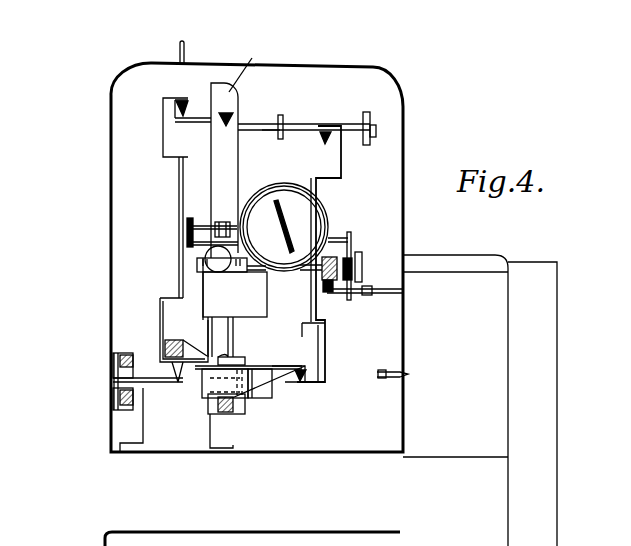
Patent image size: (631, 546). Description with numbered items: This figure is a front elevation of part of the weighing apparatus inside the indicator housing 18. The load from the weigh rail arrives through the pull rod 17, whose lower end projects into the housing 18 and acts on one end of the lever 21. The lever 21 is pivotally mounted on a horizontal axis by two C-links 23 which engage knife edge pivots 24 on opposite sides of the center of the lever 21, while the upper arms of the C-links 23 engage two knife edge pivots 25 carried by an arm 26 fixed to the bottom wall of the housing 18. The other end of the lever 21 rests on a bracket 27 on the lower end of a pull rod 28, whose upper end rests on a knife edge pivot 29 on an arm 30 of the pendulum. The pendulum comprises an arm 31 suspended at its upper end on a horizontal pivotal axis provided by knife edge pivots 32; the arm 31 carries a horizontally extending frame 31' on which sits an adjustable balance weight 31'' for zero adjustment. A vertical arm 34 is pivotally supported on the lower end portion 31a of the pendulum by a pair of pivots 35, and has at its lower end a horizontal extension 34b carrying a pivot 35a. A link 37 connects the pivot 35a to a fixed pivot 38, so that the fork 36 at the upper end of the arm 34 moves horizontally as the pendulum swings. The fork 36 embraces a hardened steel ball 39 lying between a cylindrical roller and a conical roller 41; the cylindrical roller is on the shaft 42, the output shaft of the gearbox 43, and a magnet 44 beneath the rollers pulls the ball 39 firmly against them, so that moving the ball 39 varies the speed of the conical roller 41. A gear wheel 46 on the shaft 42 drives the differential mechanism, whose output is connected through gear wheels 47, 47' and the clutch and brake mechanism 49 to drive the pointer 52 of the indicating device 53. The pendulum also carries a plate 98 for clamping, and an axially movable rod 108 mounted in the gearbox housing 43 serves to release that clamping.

The pull rod 17 is at (186, 51).
The indicator housing 18 is at (403, 137).
The lever 21 is at (158, 376).
The C-links 23 is at (113, 380).
The knife edge pivots 24 is at (125, 355).
The knife edge pivots 25 is at (118, 408).
The arm 26 is at (120, 440).
The bracket 27 is at (158, 309).
The pull rod 28 is at (178, 175).
The knife edge pivot 29 is at (177, 101).
The arm 30 is at (187, 108).
The pendulum arm 31 is at (259, 149).
The horizontally extending frame 31' is at (307, 115).
The adjustable balance weight 31'' is at (262, 152).
The lower end portion of pendulum 31a is at (252, 400).
The knife edge pivots 32 is at (234, 118).
The vertical arm 34 is at (222, 331).
The horizontal extension 34b is at (272, 372).
The pivots 35 is at (200, 398).
The pivot 35a is at (306, 379).
The fork 36 is at (205, 264).
The link 37 is at (319, 328).
The fixed pivot 38 is at (318, 133).
The ball 39 is at (206, 250).
The conical roller 41 is at (250, 273).
The shaft 42 is at (387, 296).
The gearbox 43 is at (446, 283).
The magnet 44 is at (235, 294).
The gear wheel 46 is at (327, 293).
The gear wheel 47 is at (362, 265).
The gear wheel 47' is at (366, 259).
The clutch and brake mechanism 49 is at (222, 222).
The pointer 52 is at (281, 207).
The indicating device 53 is at (319, 226).
The plate 98 is at (316, 359).
The axially movable rod 108 is at (387, 379).